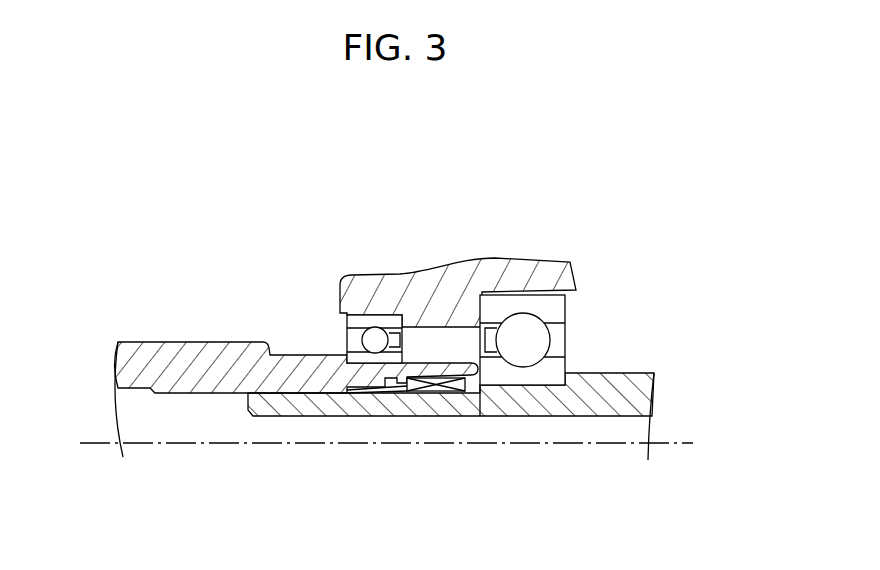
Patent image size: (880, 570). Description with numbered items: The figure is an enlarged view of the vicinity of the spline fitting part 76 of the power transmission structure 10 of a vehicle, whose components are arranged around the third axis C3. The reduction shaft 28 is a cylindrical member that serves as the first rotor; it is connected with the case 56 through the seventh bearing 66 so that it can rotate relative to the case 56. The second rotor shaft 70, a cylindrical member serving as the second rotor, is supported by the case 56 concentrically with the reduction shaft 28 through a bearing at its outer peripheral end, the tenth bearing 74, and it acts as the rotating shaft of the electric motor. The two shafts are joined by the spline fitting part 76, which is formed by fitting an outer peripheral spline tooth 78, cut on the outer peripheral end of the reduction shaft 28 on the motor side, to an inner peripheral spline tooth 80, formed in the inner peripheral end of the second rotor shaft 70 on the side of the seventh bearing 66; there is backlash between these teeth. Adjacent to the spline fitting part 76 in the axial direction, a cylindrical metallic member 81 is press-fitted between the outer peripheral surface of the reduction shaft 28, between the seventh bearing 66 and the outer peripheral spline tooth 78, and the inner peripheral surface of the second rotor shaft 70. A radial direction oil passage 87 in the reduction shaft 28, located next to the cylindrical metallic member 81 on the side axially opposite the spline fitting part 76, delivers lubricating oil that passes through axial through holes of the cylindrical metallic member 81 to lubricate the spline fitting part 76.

The power transmission structure of a vehicle 10 is at (511, 164).
The reduction shaft 28 is at (631, 405).
The case 56 is at (415, 282).
The seventh bearing 66 is at (553, 307).
The second rotor shaft 70 is at (147, 380).
The tenth bearing 74 is at (358, 323).
The spline fitting part 76 is at (292, 380).
The outer peripheral spline tooth 78 is at (337, 388).
The inner peripheral spline tooth 80 is at (177, 392).
The cylindrical metallic member 81 is at (435, 393).
The radial direction oil passage 87 is at (467, 393).
The third axis C3 is at (665, 443).